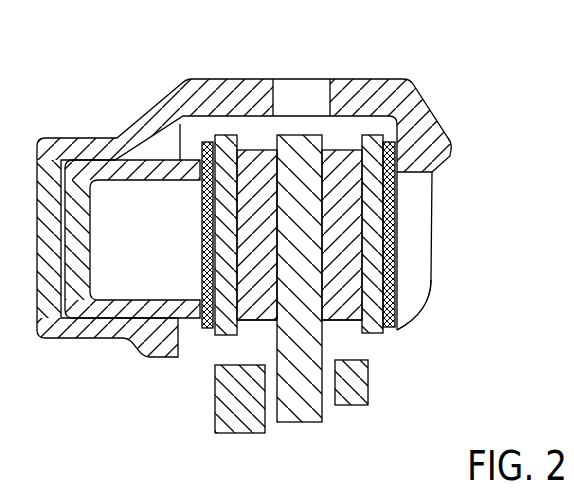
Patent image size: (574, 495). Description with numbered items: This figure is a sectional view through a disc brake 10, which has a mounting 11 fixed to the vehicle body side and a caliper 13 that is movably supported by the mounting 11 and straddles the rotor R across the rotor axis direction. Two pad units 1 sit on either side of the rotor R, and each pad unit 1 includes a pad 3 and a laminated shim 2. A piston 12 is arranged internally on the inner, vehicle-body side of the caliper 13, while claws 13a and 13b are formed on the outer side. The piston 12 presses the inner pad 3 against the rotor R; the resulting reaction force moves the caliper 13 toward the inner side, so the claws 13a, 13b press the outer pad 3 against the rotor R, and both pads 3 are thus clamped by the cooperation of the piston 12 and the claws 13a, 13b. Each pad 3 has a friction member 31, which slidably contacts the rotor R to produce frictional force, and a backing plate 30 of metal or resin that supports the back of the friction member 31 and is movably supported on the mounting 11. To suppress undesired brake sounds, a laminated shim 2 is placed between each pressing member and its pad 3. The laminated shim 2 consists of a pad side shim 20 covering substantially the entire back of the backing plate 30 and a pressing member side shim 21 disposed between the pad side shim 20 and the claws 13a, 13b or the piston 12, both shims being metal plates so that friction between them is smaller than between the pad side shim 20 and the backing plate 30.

The pad unit 1 is at (342, 295).
The laminated shim 2 is at (339, 270).
The pad 3 is at (356, 293).
The disc brake 10 is at (147, 68).
The mounting 11 is at (365, 385).
The piston 12 is at (100, 172).
The caliper 13 is at (240, 87).
The claw 13a is at (415, 208).
The claw 13b is at (469, 269).
The pad side shim 20 is at (373, 310).
The pressing member side shim 21 is at (395, 273).
The backing plate 30 is at (357, 312).
The friction member 31 is at (343, 325).
The rotor R is at (317, 407).